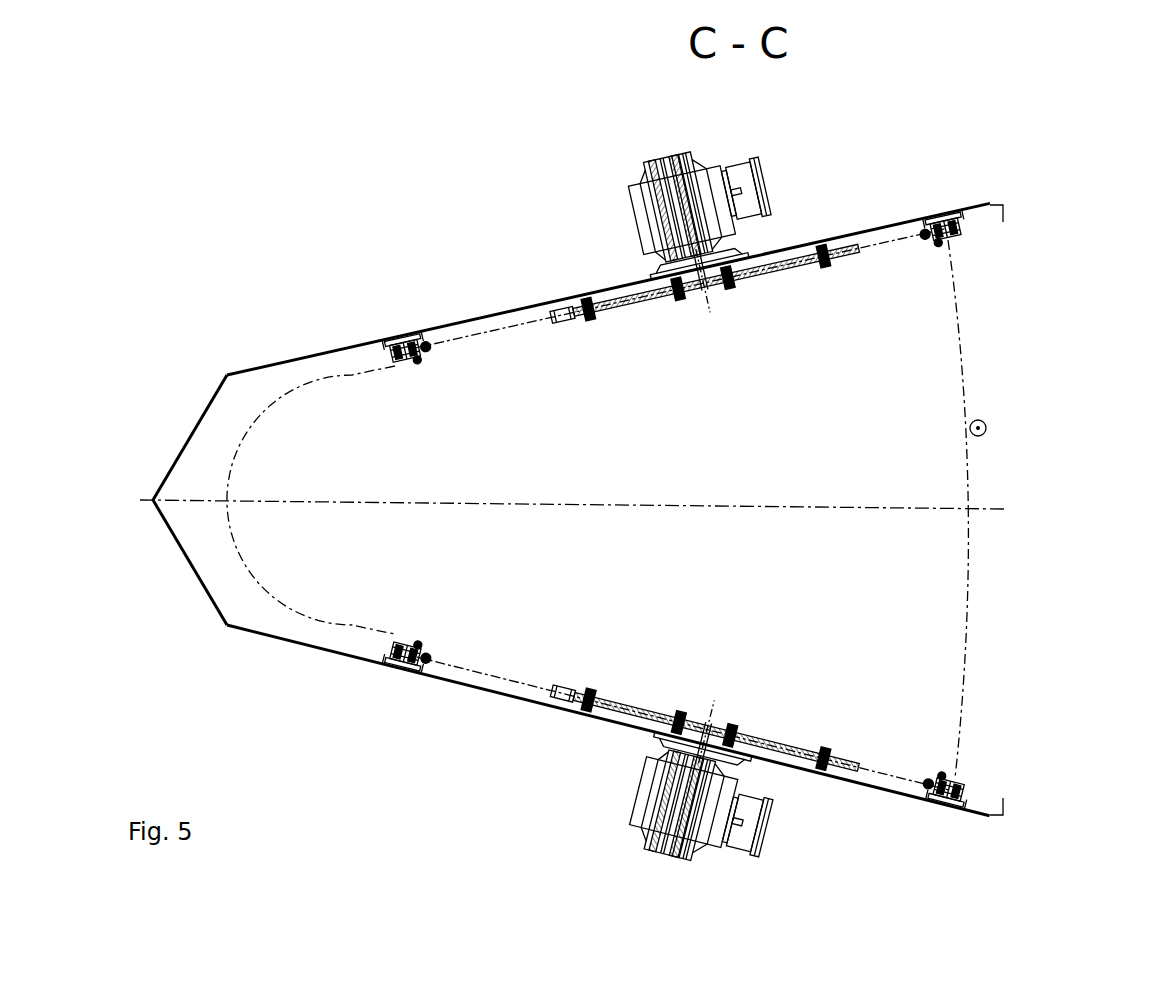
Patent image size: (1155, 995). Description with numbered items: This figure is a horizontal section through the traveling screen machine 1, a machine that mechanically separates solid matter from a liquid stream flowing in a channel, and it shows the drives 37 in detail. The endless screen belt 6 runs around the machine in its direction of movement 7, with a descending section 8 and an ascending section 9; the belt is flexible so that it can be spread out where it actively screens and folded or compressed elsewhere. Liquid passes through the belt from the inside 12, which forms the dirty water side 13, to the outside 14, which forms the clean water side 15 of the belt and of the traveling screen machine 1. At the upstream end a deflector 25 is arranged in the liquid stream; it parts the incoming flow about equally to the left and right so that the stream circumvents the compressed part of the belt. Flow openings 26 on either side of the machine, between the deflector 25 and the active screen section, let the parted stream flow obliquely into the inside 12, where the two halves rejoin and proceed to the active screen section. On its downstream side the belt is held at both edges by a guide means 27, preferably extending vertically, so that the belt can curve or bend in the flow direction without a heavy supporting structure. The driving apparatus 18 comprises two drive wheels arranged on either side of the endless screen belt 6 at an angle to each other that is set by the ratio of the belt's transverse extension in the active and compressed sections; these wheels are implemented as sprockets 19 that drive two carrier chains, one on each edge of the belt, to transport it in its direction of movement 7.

The traveling screen machine 1 is at (416, 226).
The endless screen belt 6 is at (967, 640).
The direction of movement 7 is at (987, 429).
The descending section 8 is at (316, 372).
The ascending section 9 is at (965, 357).
The inside 12 is at (718, 579).
The dirty water side 13 is at (86, 621).
The outside 14 is at (1122, 579).
The clean water side 15 is at (1134, 636).
The driving apparatus 18 is at (829, 156).
The sprockets 19 is at (624, 300).
The deflector 25 is at (196, 422).
The flow openings 26 is at (491, 332).
The guide means 27 is at (956, 208).
The drives 37 is at (658, 180).